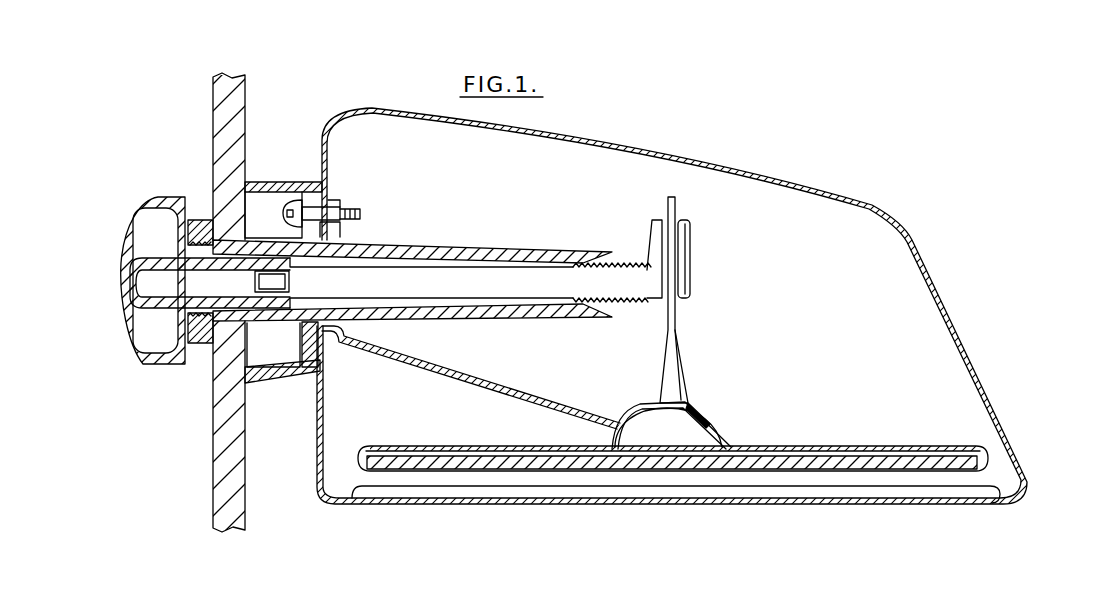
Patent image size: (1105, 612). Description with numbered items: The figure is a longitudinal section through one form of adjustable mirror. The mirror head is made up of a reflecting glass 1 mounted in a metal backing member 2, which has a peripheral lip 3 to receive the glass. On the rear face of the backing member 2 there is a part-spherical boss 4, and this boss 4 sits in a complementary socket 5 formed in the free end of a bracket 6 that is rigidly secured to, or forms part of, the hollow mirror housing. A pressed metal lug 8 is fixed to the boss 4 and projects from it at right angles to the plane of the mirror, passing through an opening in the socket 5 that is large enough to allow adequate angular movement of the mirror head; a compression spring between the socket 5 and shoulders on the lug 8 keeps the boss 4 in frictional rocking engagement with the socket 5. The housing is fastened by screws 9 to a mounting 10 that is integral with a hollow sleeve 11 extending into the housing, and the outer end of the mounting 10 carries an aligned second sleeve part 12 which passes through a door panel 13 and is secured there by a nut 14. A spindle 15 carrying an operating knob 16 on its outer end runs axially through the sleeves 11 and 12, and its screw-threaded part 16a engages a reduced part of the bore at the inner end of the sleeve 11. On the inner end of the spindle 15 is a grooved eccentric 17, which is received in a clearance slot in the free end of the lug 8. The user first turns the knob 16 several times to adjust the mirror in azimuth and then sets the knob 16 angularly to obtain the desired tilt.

The reflecting glass 1 is at (798, 475).
The metal backing member 2 is at (802, 448).
The peripheral lip 3 is at (987, 452).
The part-spherical boss 4 is at (707, 413).
The socket 5 is at (637, 407).
The bracket 6 is at (460, 377).
The pressed metal lug 8 is at (677, 315).
The screws 9 is at (328, 212).
The mounting 10 is at (275, 182).
The hollow sleeve 11 is at (457, 250).
The second sleeve part 12 is at (263, 318).
The door panel 13 is at (225, 121).
The nut 14 is at (205, 340).
The spindle 15 is at (527, 283).
The operating knob 16 is at (135, 222).
The screw-threaded part 16a is at (632, 287).
The grooved eccentric 17 is at (685, 242).